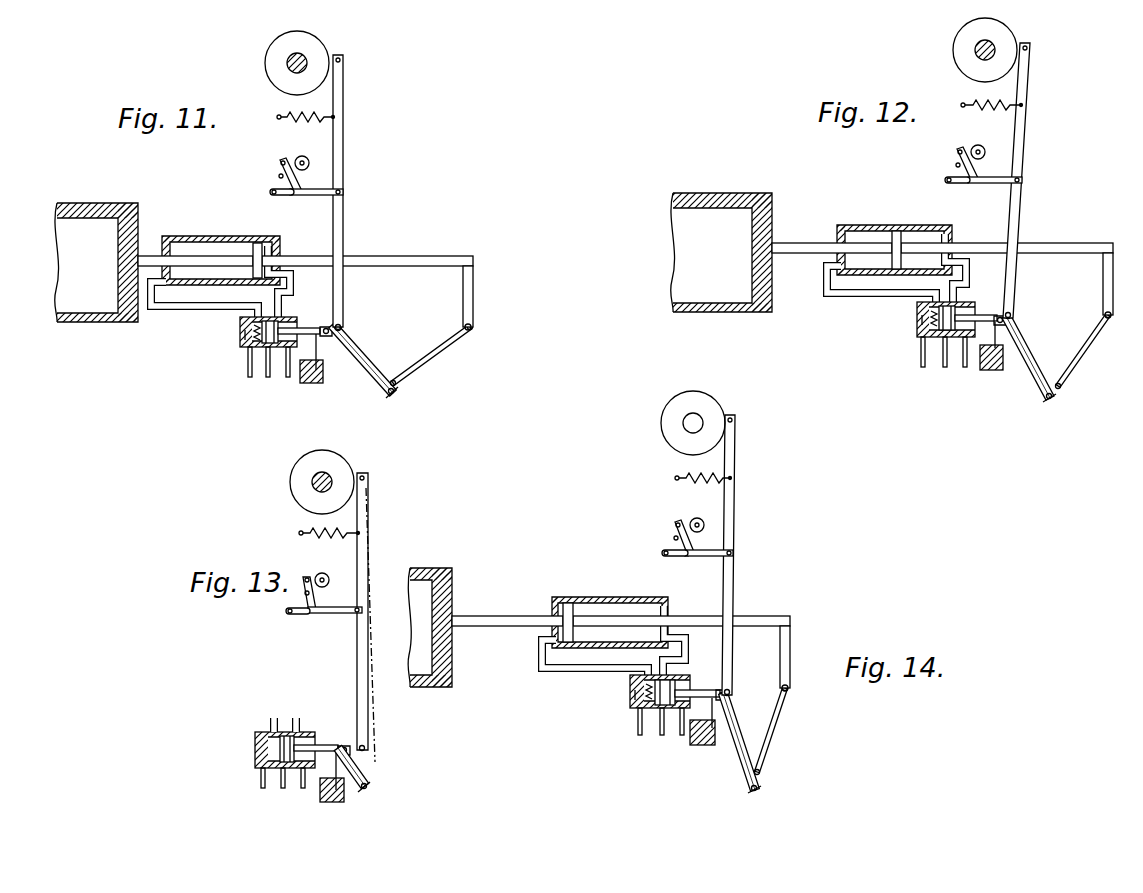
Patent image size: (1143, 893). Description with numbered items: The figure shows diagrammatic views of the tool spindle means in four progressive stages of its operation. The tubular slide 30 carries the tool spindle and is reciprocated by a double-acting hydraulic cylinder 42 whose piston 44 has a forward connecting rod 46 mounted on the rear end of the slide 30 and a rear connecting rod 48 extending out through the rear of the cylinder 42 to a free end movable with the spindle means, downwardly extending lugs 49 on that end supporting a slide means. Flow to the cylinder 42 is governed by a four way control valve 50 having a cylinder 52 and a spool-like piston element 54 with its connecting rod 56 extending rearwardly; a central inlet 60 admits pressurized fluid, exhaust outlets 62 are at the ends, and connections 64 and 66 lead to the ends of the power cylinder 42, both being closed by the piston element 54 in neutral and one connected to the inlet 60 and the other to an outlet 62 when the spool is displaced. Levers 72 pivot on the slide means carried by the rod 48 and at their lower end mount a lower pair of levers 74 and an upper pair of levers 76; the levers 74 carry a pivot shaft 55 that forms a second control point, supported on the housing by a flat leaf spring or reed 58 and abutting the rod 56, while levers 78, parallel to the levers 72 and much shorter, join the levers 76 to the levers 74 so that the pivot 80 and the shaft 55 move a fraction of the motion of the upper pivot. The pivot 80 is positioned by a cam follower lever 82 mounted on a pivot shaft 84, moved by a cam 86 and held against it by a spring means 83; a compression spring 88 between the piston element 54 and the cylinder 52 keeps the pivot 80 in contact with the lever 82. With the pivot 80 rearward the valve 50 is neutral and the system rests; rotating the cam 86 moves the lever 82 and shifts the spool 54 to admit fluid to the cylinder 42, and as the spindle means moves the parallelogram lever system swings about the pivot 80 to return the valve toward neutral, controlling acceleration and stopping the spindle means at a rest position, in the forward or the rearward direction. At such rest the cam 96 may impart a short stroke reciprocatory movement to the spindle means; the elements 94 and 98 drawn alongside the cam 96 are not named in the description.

In FIG. 11, the tubular slide 30 is at (92, 322).
In FIG. 12, the tubular slide 30 is at (742, 312).
In FIG. 14, the tubular slide 30 is at (449, 570).
In FIG. 11, the double-acting hydraulic cylinder 42 is at (204, 236).
In FIG. 12, the double-acting hydraulic cylinder 42 is at (862, 225).
In FIG. 14, the double-acting hydraulic cylinder 42 is at (618, 597).
In FIG. 11, the piston 44 is at (257, 243).
In FIG. 12, the piston 44 is at (897, 231).
In FIG. 14, the piston 44 is at (569, 603).
In FIG. 11, the forward connecting rod 46 is at (150, 256).
In FIG. 12, the forward connecting rod 46 is at (802, 243).
In FIG. 14, the forward connecting rod 46 is at (508, 611).
In FIG. 11, the rear connecting rod 48 is at (414, 256).
In FIG. 12, the rear connecting rod 48 is at (1060, 243).
In FIG. 14, the rear connecting rod 48 is at (770, 616).
In FIG. 11, the downwardly extending lugs 49 is at (474, 316).
In FIG. 12, the downwardly extending lugs 49 is at (1103, 281).
In FIG. 14, the downwardly extending lugs 49 is at (791, 661).
In FIG. 11, the four way control valve 50 is at (232, 352).
In FIG. 12, the four way control valve 50 is at (913, 348).
In FIG. 13, the four way control valve 50 is at (260, 733).
In FIG. 14, the four way control valve 50 is at (660, 691).
In FIG. 11, the control valve cylinder 52 is at (240, 321).
In FIG. 12, the control valve cylinder 52 is at (917, 310).
In FIG. 14, the control valve cylinder 52 is at (630, 687).
In FIG. 11, the spool-like piston element 54 is at (276, 326).
In FIG. 12, the spool-like piston element 54 is at (958, 312).
In FIG. 13, the spool-like piston element 54 is at (287, 736).
In FIG. 14, the spool-like piston element 54 is at (672, 680).
In FIG. 11, the pivot shaft 55 is at (315, 350).
In FIG. 12, the pivot shaft 55 is at (996, 336).
In FIG. 13, the pivot shaft 55 is at (337, 748).
In FIG. 14, the pivot shaft 55 is at (711, 704).
In FIG. 11, the connecting rod 56 is at (320, 327).
In FIG. 12, the connecting rod 56 is at (990, 314).
In FIG. 13, the connecting rod 56 is at (331, 744).
In FIG. 14, the connecting rod 56 is at (704, 690).
In FIG. 11, the flat leaf spring or reed 58 is at (323, 376).
In FIG. 12, the flat leaf spring or reed 58 is at (991, 357).
In FIG. 13, the flat leaf spring or reed 58 is at (332, 790).
In FIG. 14, the flat leaf spring or reed 58 is at (702, 732).
In FIG. 11, the central inlet 60 is at (268, 378).
In FIG. 12, the central inlet 60 is at (945, 368).
In FIG. 13, the central inlet 60 is at (283, 789).
In FIG. 14, the central inlet 60 is at (662, 736).
In FIG. 11, the exhaust outlets 62 is at (250, 378).
In FIG. 12, the exhaust outlets 62 is at (922, 368).
In FIG. 13, the exhaust outlets 62 is at (263, 789).
In FIG. 14, the exhaust outlets 62 is at (640, 735).
In FIG. 11, the connection 64 is at (156, 310).
In FIG. 12, the connection 64 is at (826, 292).
In FIG. 13, the connection 64 is at (272, 731).
In FIG. 14, the connection 64 is at (540, 661).
In FIG. 11, the connection 66 is at (292, 286).
In FIG. 12, the connection 66 is at (968, 262).
In FIG. 13, the connection 66 is at (300, 722).
In FIG. 14, the connection 66 is at (672, 630).
In FIG. 11, the levers 72 is at (441, 350).
In FIG. 12, the levers 72 is at (1085, 345).
In FIG. 14, the levers 72 is at (778, 720).
In FIG. 11, the lower pair of levers 74 is at (388, 395).
In FIG. 12, the lower pair of levers 74 is at (1044, 398).
In FIG. 13, the lower pair of levers 74 is at (366, 790).
In FIG. 14, the lower pair of levers 74 is at (750, 790).
In FIG. 11, the upper pair of levers 76 is at (374, 370).
In FIG. 12, the upper pair of levers 76 is at (1038, 360).
In FIG. 13, the upper pair of levers 76 is at (368, 770).
In FIG. 14, the upper pair of levers 76 is at (742, 764).
In FIG. 11, the levers 78 is at (342, 324).
In FIG. 12, the levers 78 is at (1012, 312).
In FIG. 14, the levers 78 is at (731, 689).
In FIG. 11, the pivot 80 is at (340, 331).
In FIG. 12, the pivot 80 is at (1012, 319).
In FIG. 13, the pivot 80 is at (352, 750).
In FIG. 14, the pivot 80 is at (738, 695).
In FIG. 11, the cam follower lever 82 is at (344, 151).
In FIG. 12, the cam follower lever 82 is at (1027, 101).
In FIG. 13, the cam follower lever 82 is at (369, 498).
In FIG. 14, the cam follower lever 82 is at (734, 462).
In FIG. 11, the spring means 83 is at (281, 116).
In FIG. 12, the spring means 83 is at (970, 104).
In FIG. 13, the spring means 83 is at (306, 531).
In FIG. 14, the spring means 83 is at (682, 476).
In FIG. 11, the pivot shaft 84 is at (344, 192).
In FIG. 12, the pivot shaft 84 is at (1023, 180).
In FIG. 13, the pivot shaft 84 is at (346, 613).
In FIG. 14, the pivot shaft 84 is at (735, 553).
In FIG. 11, the cam 86 is at (266, 64).
In FIG. 12, the cam 86 is at (953, 44).
In FIG. 13, the cam 86 is at (292, 474).
In FIG. 14, the cam 86 is at (661, 420).
In FIG. 11, the compression spring 88 is at (243, 340).
In FIG. 12, the compression spring 88 is at (920, 322).
In FIG. 14, the compression spring 88 is at (634, 697).
In FIG. 11, the latch lever 94 is at (282, 162).
In FIG. 12, the latch lever 94 is at (960, 152).
In FIG. 13, the latch lever 94 is at (307, 578).
In FIG. 14, the latch lever 94 is at (678, 520).
In FIG. 11, the cam 96 is at (304, 156).
In FIG. 12, the cam 96 is at (981, 146).
In FIG. 13, the cam 96 is at (325, 573).
In FIG. 14, the cam 96 is at (700, 518).
In FIG. 11, the link 98 is at (270, 191).
In FIG. 12, the link 98 is at (945, 180).
In FIG. 13, the link 98 is at (288, 609).
In FIG. 14, the link 98 is at (664, 552).